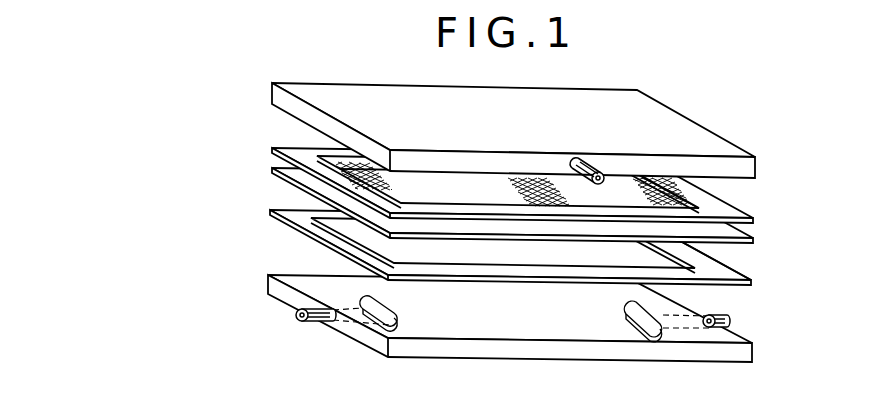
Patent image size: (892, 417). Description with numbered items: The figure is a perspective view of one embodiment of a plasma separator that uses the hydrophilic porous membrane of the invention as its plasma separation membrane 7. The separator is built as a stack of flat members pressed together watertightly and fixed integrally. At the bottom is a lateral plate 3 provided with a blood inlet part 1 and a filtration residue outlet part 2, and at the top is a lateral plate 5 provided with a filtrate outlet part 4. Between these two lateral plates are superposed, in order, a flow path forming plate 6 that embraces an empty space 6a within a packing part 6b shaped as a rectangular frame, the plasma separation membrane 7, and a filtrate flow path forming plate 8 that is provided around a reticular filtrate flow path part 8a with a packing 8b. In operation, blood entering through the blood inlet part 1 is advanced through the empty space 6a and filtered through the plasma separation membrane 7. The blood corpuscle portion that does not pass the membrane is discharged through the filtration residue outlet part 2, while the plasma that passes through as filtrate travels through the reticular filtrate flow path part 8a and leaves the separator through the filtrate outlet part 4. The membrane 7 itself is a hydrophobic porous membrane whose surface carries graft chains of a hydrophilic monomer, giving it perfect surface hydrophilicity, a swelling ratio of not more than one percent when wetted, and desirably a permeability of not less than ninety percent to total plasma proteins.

The blood inlet part 1 is at (317, 325).
The filtration residue outlet part 2 is at (723, 317).
The lateral plate 3 is at (565, 350).
The filtrate outlet part 4 is at (588, 156).
The lateral plate 5 is at (683, 137).
The flow path forming plate 6 is at (513, 247).
The empty space 6a is at (382, 242).
The packing part 6b is at (723, 273).
The plasma separation membrane 7 is at (292, 173).
The filtrate flow path forming plate 8 is at (515, 168).
The reticular filtrate flow path part 8a is at (687, 190).
The packing 8b is at (740, 210).